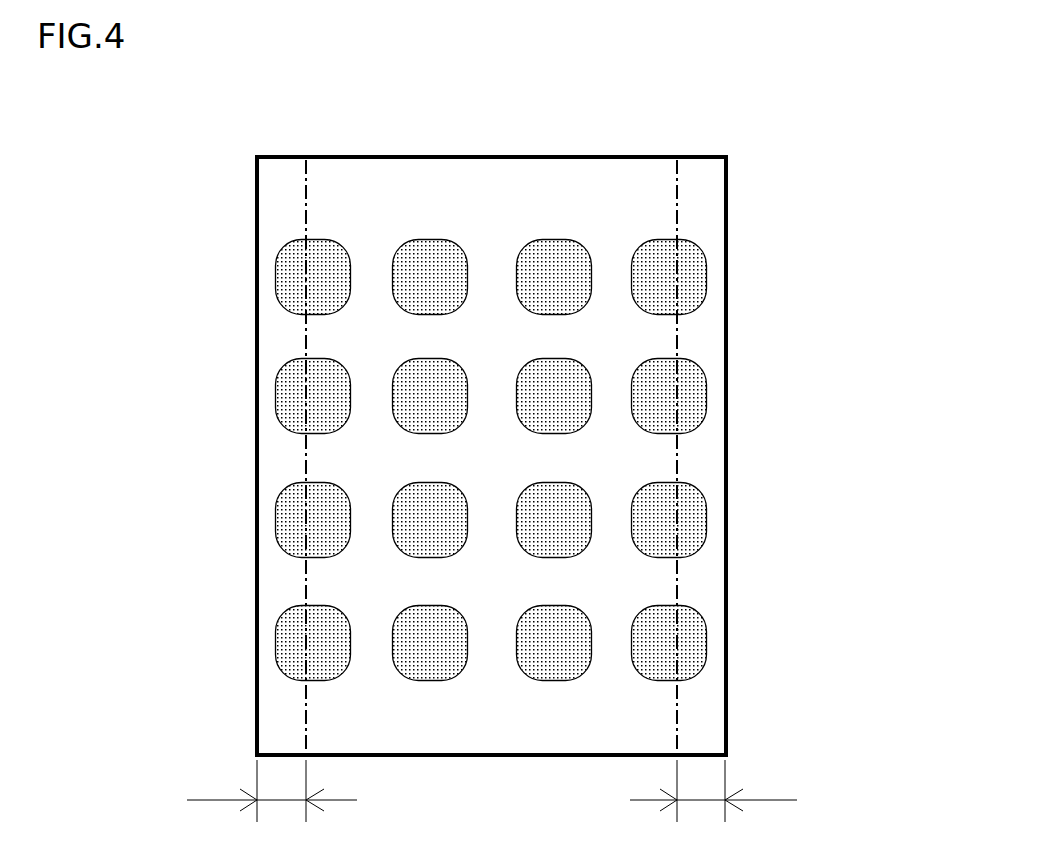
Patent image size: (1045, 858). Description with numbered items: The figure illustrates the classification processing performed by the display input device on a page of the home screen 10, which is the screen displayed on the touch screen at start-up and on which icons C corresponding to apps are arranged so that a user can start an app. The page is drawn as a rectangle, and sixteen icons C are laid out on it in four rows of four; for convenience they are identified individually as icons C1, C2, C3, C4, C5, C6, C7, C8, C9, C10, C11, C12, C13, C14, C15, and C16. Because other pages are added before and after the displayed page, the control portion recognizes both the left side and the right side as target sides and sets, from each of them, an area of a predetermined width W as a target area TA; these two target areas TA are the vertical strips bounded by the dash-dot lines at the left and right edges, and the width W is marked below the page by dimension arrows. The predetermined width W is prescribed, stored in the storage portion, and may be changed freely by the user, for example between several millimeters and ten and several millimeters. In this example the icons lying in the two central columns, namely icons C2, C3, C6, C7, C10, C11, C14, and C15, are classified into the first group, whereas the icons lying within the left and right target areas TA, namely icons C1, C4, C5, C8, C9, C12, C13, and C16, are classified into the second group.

The home screen 10 is at (494, 180).
The target area TA is at (277, 180).
The predetermined width W is at (492, 791).
The icon C is at (492, 441).
The icon C1 is at (277, 273).
The icon C2 is at (411, 243).
The icon C3 is at (535, 243).
The icon C4 is at (707, 273).
The icon C5 is at (277, 392).
The icon C6 is at (411, 362).
The icon C7 is at (535, 362).
The icon C8 is at (707, 392).
The icon C9 is at (277, 516).
The icon C10 is at (411, 486).
The icon C11 is at (535, 486).
The icon C12 is at (707, 516).
The icon C13 is at (277, 639).
The icon C14 is at (411, 609).
The icon C15 is at (535, 609).
The icon C16 is at (707, 639).